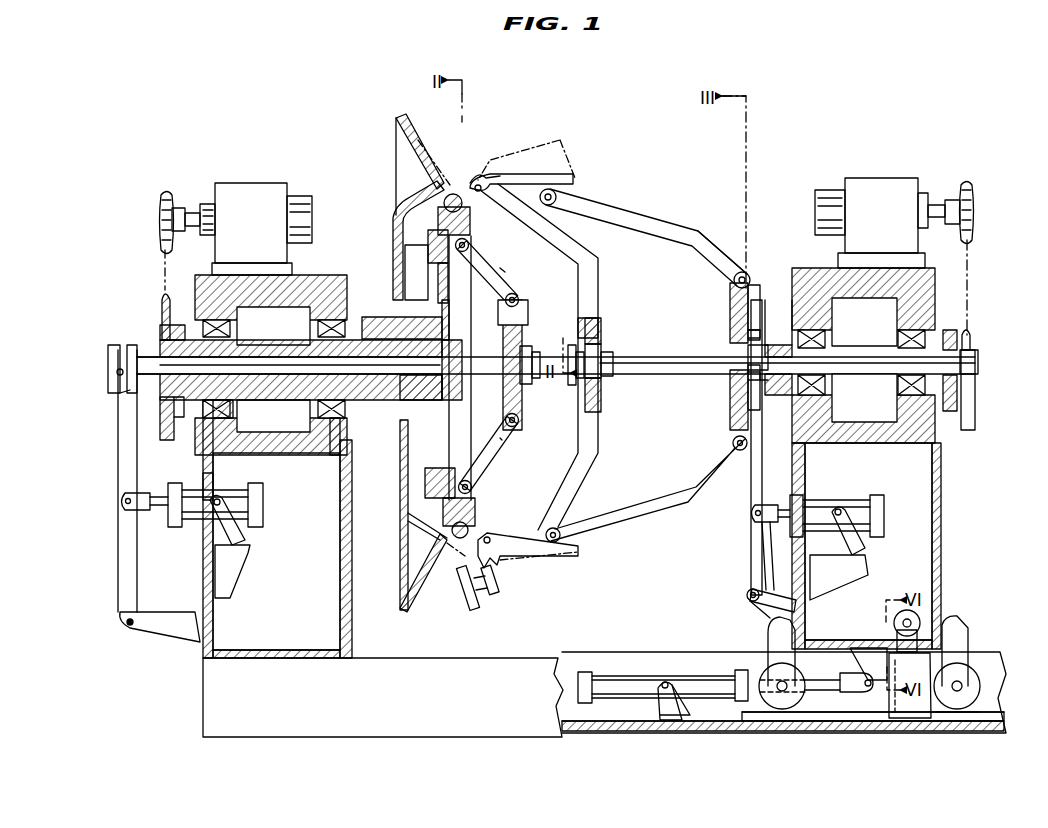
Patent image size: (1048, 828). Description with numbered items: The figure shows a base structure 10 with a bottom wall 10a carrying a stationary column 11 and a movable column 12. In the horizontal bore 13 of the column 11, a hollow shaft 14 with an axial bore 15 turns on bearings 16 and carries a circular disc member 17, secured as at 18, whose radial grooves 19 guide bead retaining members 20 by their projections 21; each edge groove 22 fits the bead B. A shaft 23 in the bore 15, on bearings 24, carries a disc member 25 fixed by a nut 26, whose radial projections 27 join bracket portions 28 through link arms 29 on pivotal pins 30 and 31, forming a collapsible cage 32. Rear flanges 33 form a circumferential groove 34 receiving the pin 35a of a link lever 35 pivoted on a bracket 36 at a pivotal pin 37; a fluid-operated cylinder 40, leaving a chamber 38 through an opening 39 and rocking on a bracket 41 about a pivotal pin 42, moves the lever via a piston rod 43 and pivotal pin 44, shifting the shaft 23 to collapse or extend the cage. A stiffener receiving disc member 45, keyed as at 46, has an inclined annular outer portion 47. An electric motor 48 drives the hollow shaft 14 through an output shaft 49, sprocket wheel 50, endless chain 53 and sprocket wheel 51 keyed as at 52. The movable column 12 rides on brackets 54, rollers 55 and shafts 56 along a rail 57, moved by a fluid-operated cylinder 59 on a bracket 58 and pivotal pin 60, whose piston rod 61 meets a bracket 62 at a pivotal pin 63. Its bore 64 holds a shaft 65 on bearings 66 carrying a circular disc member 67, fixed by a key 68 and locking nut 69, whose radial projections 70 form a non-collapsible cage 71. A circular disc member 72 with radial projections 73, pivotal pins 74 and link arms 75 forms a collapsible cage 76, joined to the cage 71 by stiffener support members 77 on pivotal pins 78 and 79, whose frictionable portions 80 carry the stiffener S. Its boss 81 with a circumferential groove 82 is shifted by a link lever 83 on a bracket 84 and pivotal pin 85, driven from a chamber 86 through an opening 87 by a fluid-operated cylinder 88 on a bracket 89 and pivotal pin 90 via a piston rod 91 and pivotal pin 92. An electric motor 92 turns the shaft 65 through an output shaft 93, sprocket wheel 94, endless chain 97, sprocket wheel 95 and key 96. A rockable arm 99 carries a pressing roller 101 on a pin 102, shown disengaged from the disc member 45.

The base structure 10 is at (200, 718).
The bottom wall 10a is at (583, 734).
The stationary column 11 is at (355, 609).
The movable column 12 is at (942, 526).
The horizontal bore 13 is at (318, 283).
The hollow shaft 14 is at (395, 420).
The axial bore 15 is at (285, 383).
The bearing 16 is at (200, 423).
The circular disc member 17 is at (440, 406).
The key 18 is at (455, 320).
The radial grooves 19 is at (432, 300).
The bead retaining members 20 is at (470, 244).
The projection 21 is at (395, 228).
The groove 22 is at (470, 222).
The shaft 23 is at (276, 350).
The bearing 24 is at (162, 403).
The disc member 25 is at (522, 398).
The nut 26 is at (530, 343).
The radial projections 27 is at (522, 423).
The bracket portion 28 is at (468, 523).
The link arm 29 is at (495, 468).
The pivotal pin 30 is at (471, 489).
The pivotal pin 31 is at (500, 438).
The collapsible cage 32 is at (505, 272).
The flange 33 is at (110, 348).
The circumferential groove 34 is at (120, 343).
The link lever 35 is at (118, 543).
The pin 35a is at (115, 372).
The bracket 36 is at (158, 643).
The pivotal pin 37 is at (125, 628).
The chamber 38 is at (292, 598).
The opening 39 is at (203, 543).
The fluid-operated cylinder 40 is at (270, 508).
The bracket 41 is at (237, 576).
The pivotal pin 42 is at (222, 496).
The piston rod 43 is at (158, 505).
The pivotal pin 44 is at (122, 495).
The stiffener receiving disc member 45 is at (425, 248).
The key 46 is at (375, 315).
The annular outer portion 47 is at (410, 123).
The electric motor 48 is at (258, 231).
The output shaft 49 is at (190, 208).
The sprocket wheel 50 is at (162, 191).
The sprocket wheel 51 is at (158, 297).
The key 52 is at (160, 338).
The endless chain 53 is at (160, 259).
The bracket 54 is at (768, 643).
The roller 55 is at (775, 722).
The shaft 56 is at (786, 710).
The rail 57 is at (900, 722).
The bracket 58 is at (658, 710).
The fluid-operated cylinder 59 is at (716, 700).
The pivotal pin 60 is at (676, 720).
The piston rod 61 is at (832, 700).
The bracket 62 is at (858, 658).
The pivotal pin 63 is at (872, 715).
The bore 64 is at (830, 383).
The shaft 65 is at (865, 350).
The bearing 66 is at (790, 423).
The circular disc member 67 is at (602, 333).
The key 68 is at (610, 368).
The locking nut 69 is at (572, 378).
The radial projections 70 is at (582, 237).
The non-collapsible cage 71 is at (602, 281).
The circular disc member 72 is at (730, 312).
The radial projections 73 is at (728, 283).
The pivotal pin 74 is at (745, 272).
The link arm 75 is at (650, 223).
The collapsible cage 76 is at (695, 218).
The stiffener support member 77 is at (555, 174).
The pivotal pin 78 is at (478, 178).
The pivotal pin 79 is at (560, 193).
The frictionable portion 80 is at (490, 173).
The boss 81 is at (762, 318).
The circumferential groove 82 is at (735, 408).
The link lever 83 is at (748, 548).
The bracket 84 is at (748, 592).
The pivotal pin 85 is at (750, 606).
The chamber 86 is at (918, 525).
The opening 87 is at (810, 495).
The fluid-operated cylinder 88 is at (878, 493).
The bracket 89 is at (868, 556).
The pivotal pin 90 is at (842, 503).
The piston rod 91 is at (777, 538).
The pivotal pin 92 is at (752, 511).
The output shaft 93 is at (945, 203).
The sprocket wheel 94 is at (970, 183).
The sprocket wheel 95 is at (970, 323).
The key 96 is at (978, 356).
The endless chain 97 is at (968, 276).
The rockable arm 99 is at (498, 580).
The pressing roller 101 is at (466, 604).
The pin 102 is at (486, 604).
The annular bead B is at (453, 192).
The stiffener S is at (550, 163).